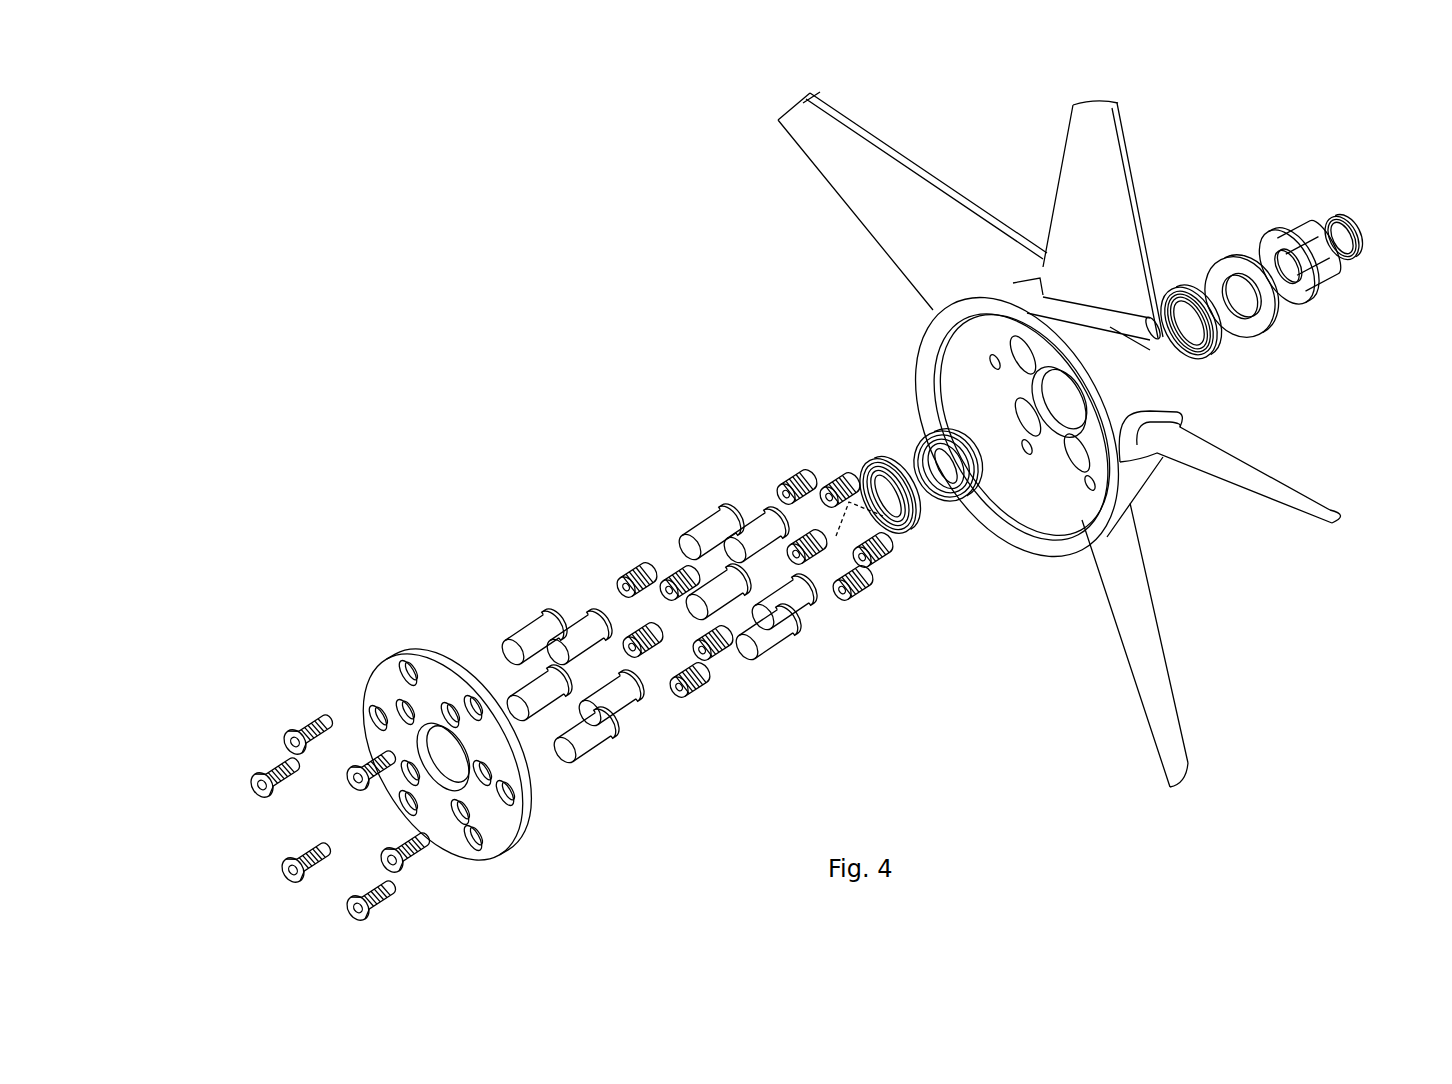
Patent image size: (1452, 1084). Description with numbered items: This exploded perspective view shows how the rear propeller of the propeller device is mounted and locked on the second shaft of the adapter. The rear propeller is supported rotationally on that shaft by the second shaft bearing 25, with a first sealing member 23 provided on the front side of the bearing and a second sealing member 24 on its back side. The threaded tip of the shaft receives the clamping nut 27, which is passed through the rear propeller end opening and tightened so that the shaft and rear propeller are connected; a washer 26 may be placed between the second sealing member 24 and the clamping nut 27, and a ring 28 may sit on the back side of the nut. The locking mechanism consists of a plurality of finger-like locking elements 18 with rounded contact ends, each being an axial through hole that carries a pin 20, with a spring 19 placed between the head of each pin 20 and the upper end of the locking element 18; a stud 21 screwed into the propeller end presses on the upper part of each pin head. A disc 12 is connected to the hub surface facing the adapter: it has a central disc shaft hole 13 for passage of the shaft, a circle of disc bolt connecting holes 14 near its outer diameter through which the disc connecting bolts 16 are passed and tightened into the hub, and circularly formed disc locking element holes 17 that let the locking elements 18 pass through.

The disc 12 is at (366, 652).
The disc shaft hole 13 is at (445, 748).
The disc bolt connecting holes 14 is at (473, 847).
The disc connecting bolts 16 is at (257, 760).
The disc locking element holes 17 is at (487, 769).
The locking elements 18 is at (520, 620).
The spring 19 is at (633, 570).
The pin 20 is at (770, 637).
The stud 21 is at (793, 470).
The first sealing member 23 is at (910, 507).
The second sealing member 24 is at (1210, 353).
The second shaft bearing 25 is at (918, 438).
The washer 26 is at (1227, 263).
The clamping nut 27 is at (1323, 293).
The ring 28 is at (1335, 218).